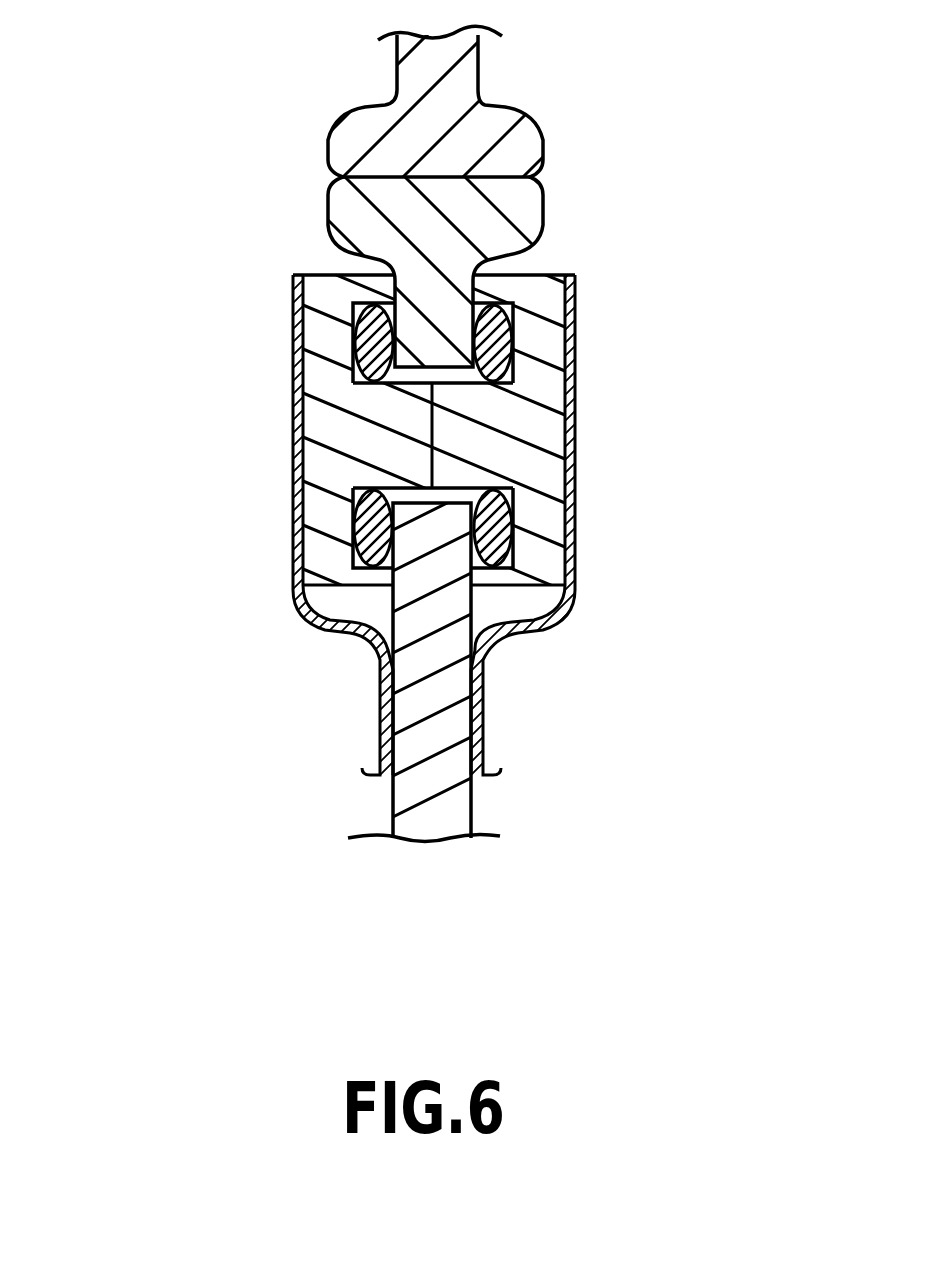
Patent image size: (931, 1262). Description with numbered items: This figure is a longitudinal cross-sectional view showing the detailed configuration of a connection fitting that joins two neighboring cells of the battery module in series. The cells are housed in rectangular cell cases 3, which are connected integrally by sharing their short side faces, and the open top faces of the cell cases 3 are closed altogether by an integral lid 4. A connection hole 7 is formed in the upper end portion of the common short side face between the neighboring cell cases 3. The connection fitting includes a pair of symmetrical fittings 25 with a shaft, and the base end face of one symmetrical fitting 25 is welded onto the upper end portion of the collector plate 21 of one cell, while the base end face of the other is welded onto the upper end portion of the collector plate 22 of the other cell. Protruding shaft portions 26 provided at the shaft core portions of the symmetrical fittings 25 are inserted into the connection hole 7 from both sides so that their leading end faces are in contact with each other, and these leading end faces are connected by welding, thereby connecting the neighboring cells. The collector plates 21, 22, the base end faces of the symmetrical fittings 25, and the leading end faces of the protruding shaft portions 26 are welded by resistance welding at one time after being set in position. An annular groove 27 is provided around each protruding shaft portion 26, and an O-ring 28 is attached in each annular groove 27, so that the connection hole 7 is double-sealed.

The cell case 3 is at (78, 464).
The integral lid 4 is at (477, 80).
The connection hole 7 is at (373, 470).
The collector plate 21 is at (482, 723).
The collector plate 22 is at (380, 728).
The symmetrical fitting 25 is at (293, 595).
The protruding shaft portion 26 is at (313, 405).
The annular groove 27 is at (352, 515).
The O-ring 28 is at (352, 327).